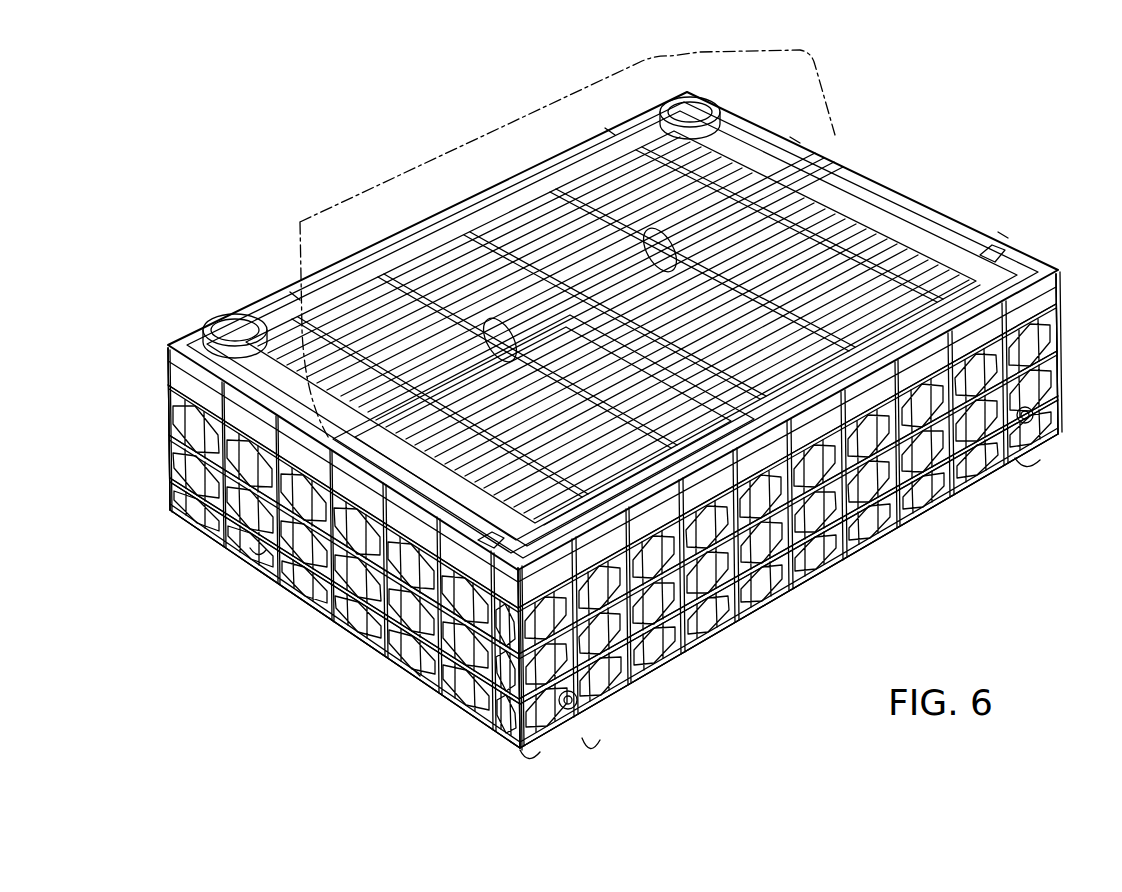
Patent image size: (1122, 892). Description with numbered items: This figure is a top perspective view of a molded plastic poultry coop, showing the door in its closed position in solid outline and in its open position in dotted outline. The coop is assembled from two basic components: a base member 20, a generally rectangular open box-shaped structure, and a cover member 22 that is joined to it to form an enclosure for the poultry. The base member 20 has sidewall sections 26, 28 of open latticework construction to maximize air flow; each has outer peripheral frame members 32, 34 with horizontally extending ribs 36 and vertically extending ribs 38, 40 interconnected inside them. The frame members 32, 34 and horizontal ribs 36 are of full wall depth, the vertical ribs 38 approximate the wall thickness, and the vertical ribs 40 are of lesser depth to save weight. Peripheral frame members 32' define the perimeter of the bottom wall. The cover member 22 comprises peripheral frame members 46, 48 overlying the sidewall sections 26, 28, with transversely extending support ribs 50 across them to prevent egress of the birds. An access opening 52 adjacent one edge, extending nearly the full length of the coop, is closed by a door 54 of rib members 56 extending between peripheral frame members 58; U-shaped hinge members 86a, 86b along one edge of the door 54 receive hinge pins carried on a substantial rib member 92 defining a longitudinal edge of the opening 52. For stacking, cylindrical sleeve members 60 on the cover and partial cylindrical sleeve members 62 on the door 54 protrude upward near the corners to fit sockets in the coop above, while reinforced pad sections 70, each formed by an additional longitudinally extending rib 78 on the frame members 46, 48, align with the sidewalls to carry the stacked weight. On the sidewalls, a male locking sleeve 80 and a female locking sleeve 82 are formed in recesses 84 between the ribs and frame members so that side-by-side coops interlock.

The base member 20 is at (1068, 362).
The cover member 22 is at (1010, 240).
The sidewall section 26 is at (758, 595).
The sidewall section 28 is at (300, 605).
The outer peripheral frame member 32 is at (613, 502).
The peripheral frame member of bottom wall section 32' is at (614, 547).
The outer peripheral frame member 34 is at (185, 440).
The horizontally extending rib 36 is at (686, 652).
The vertically extending rib 38 is at (270, 560).
The vertically extending rib 40 is at (185, 483).
The peripheral frame member of cover 46 is at (497, 190).
The peripheral frame member of cover 48 is at (920, 180).
The transversely extending support rib 50 is at (605, 130).
The access opening 52 is at (465, 458).
The door 54 is at (817, 77).
The rib member 56 is at (918, 204).
The peripheral frame member of door 58 is at (885, 190).
The cylindrical sleeve member 60 is at (712, 100).
The partial cylindrical sleeve member 62 is at (1008, 255).
The reinforced pad section 70 is at (617, 124).
The longitudinally extending rib 78 is at (590, 152).
The male locking sleeve 80 is at (572, 708).
The female locking sleeve 82 is at (1034, 432).
The recess 84 is at (1025, 466).
The U-shaped hinge member 86a is at (830, 170).
The U-shaped hinge member 86b is at (712, 300).
The rib member 92 is at (604, 343).